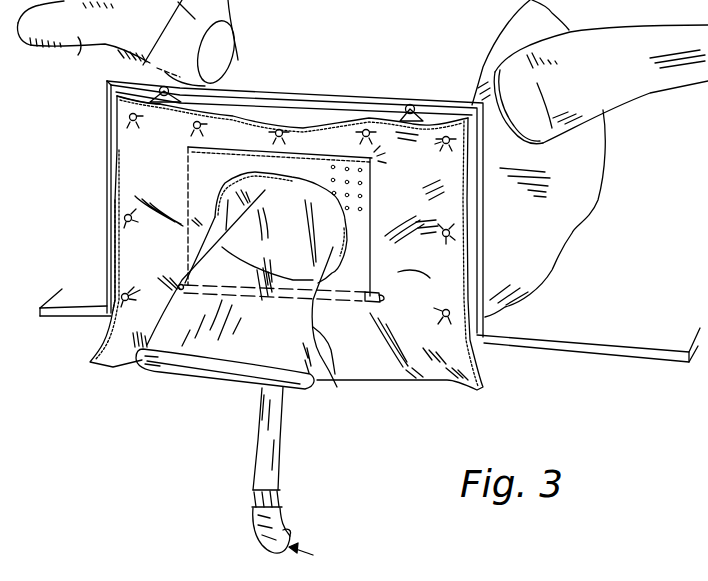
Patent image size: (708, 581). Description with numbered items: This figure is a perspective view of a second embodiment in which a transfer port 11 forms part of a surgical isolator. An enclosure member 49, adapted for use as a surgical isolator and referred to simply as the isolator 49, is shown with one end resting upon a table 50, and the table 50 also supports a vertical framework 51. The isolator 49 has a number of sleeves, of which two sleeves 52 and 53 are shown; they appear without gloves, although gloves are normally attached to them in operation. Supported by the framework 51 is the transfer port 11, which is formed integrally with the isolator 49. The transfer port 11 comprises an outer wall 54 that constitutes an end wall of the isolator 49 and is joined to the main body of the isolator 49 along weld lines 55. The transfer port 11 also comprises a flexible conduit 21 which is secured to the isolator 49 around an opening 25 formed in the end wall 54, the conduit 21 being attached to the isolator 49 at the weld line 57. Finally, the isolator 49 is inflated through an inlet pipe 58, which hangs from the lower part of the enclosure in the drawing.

The transfer port 11 is at (103, 190).
The flexible conduit 21 is at (337, 387).
The opening 25 is at (300, 227).
The enclosure member 49 is at (565, 228).
The table 50 is at (626, 319).
The vertical framework 51 is at (353, 101).
The sleeve 52 is at (129, 43).
The sleeve 53 is at (637, 91).
The outer wall 54 is at (147, 140).
The weld lines 55 is at (239, 117).
The weld line 57 is at (220, 183).
The inlet pipe 58 is at (263, 440).